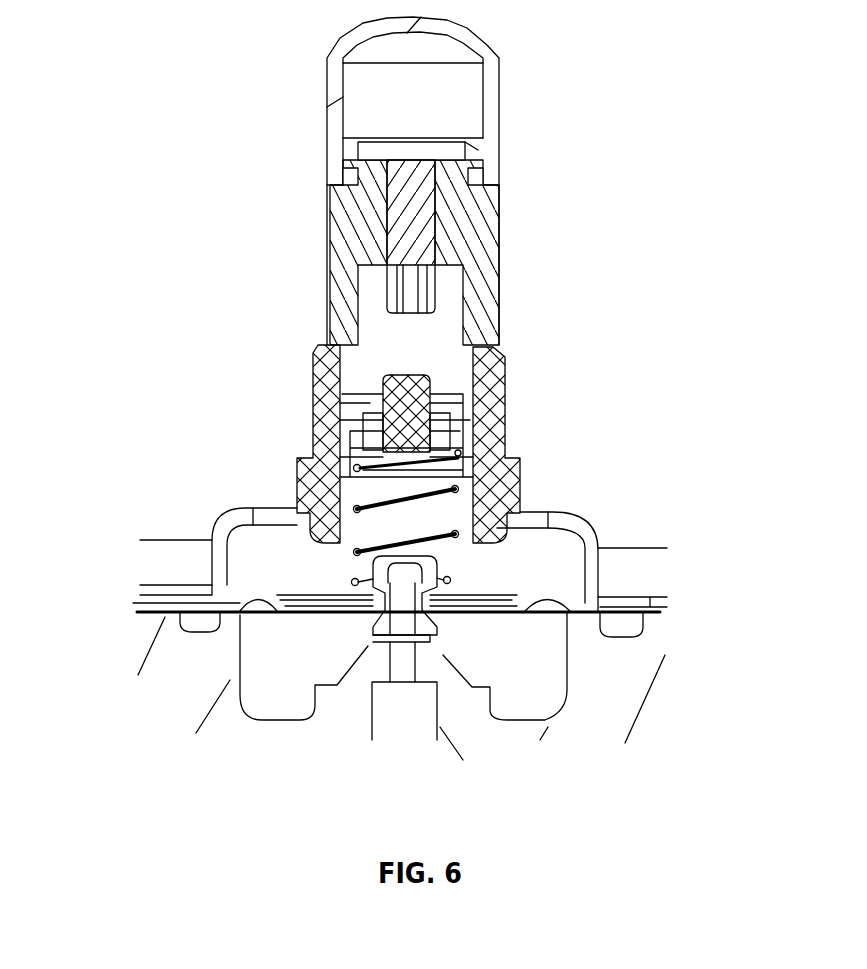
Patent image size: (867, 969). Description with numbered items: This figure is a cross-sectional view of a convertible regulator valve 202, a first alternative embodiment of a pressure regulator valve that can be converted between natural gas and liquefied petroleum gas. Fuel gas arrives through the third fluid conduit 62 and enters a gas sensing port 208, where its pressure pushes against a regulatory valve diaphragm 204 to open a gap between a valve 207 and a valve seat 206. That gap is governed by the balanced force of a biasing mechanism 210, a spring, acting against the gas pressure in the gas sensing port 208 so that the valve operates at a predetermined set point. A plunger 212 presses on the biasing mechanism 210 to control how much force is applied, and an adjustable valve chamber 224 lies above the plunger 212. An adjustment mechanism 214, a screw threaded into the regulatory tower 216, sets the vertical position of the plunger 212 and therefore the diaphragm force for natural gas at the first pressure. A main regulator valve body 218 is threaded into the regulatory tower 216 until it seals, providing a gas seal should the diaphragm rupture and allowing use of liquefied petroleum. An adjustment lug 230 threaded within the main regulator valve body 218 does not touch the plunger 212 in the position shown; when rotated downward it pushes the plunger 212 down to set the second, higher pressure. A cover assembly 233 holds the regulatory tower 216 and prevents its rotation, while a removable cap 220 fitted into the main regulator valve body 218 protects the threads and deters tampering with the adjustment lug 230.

The convertible regulator valve 202 is at (598, 328).
The removable cap 220 is at (488, 108).
The adjustment lug 230 is at (430, 208).
The main regulator valve body 218 is at (492, 275).
The regulatory tower 216 is at (502, 357).
The adjustable valve chamber 224 is at (428, 360).
The plunger 212 is at (430, 417).
The biasing mechanism 210 is at (357, 510).
The regulatory valve diaphragm 204 is at (275, 592).
The adjustment mechanism 214 is at (557, 598).
The cover assembly 233 is at (212, 527).
The valve 207 is at (400, 588).
The gas sensing port 208 is at (291, 691).
The valve seat 206 is at (366, 647).
The third fluid conduit 62 is at (420, 715).